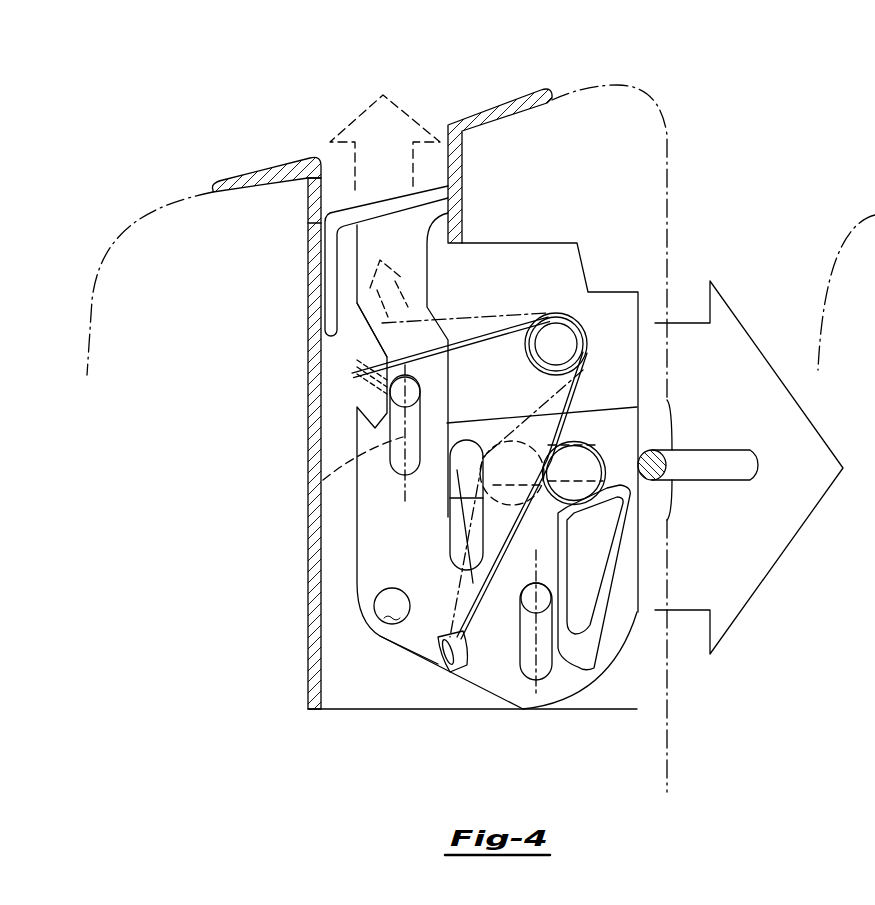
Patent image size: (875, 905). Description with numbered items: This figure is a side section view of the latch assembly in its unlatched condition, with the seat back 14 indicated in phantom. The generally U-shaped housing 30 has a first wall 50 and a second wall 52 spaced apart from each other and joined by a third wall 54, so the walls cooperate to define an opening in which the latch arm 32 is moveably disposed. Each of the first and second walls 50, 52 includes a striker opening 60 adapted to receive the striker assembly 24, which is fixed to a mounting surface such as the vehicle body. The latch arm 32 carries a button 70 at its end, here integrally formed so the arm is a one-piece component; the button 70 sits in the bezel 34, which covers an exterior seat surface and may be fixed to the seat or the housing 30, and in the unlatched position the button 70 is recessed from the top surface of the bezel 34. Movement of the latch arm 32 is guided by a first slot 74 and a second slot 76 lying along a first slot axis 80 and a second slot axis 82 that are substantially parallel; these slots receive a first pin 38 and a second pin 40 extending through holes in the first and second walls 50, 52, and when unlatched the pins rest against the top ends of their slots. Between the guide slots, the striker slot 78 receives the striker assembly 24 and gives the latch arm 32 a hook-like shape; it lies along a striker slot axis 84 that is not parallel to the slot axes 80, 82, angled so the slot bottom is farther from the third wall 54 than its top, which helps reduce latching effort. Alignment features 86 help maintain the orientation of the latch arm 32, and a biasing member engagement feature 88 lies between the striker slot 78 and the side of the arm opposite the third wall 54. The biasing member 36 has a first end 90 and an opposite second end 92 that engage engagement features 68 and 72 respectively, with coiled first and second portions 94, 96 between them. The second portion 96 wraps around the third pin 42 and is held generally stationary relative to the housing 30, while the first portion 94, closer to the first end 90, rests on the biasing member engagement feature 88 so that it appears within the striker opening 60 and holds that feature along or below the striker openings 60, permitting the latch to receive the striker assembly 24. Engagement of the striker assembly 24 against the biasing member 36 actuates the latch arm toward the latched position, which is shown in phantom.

The seat back 14 is at (173, 203).
The bezel 34 is at (255, 172).
The third wall 54 is at (308, 648).
The second wall 52 is at (333, 700).
The button 70 is at (385, 200).
The housing 30 is at (489, 243).
The latch arm 32 is at (357, 540).
The engagement feature 72 is at (357, 393).
The second end 92 is at (355, 374).
The first slot axis 80 is at (323, 480).
The first slot 74 is at (417, 467).
The first pin 38 is at (415, 393).
The striker slot 78 is at (463, 523).
The striker slot axis 84 is at (457, 527).
The biasing member 36 is at (497, 330).
The second portion 96 is at (556, 314).
The third pin 42 is at (578, 336).
The striker opening 60 is at (590, 436).
The first portion 94 is at (600, 448).
The striker assembly 24 is at (718, 451).
The second pin 40 is at (547, 597).
The biasing member engagement feature 88 is at (618, 490).
The second slot 76 is at (553, 662).
The second slot axis 82 is at (545, 690).
The alignment feature 86 is at (392, 606).
The engagement feature 68 is at (450, 672).
The first end 90 is at (444, 660).
The first wall 50 is at (440, 648).